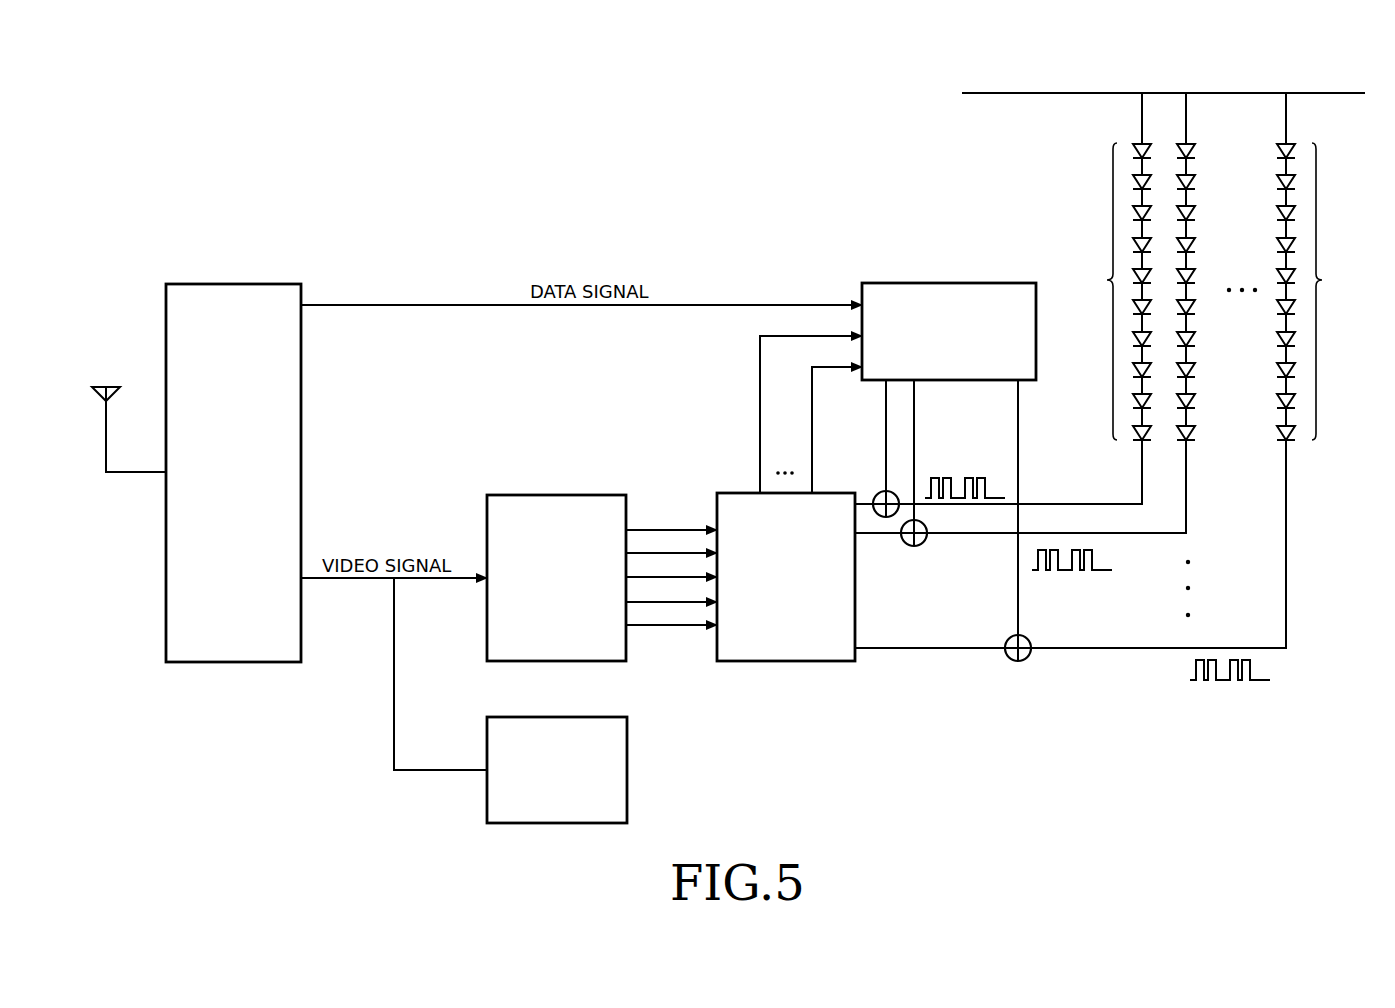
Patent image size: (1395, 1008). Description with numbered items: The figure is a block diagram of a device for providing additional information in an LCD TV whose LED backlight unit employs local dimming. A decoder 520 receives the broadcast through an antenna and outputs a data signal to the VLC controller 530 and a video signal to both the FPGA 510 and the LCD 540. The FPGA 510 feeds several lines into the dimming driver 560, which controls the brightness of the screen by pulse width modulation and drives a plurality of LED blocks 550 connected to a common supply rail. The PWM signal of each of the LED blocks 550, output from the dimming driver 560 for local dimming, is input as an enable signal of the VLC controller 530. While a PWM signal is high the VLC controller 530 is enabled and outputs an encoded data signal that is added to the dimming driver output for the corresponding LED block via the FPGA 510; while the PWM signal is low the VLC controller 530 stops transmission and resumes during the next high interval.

The FPGA 510 is at (559, 663).
The decoder 520 is at (234, 284).
The VLC controller 530 is at (946, 283).
The LCD 540 is at (628, 771).
The LED blocks 550 is at (1163, 357).
The dimming driver 560 is at (789, 663).